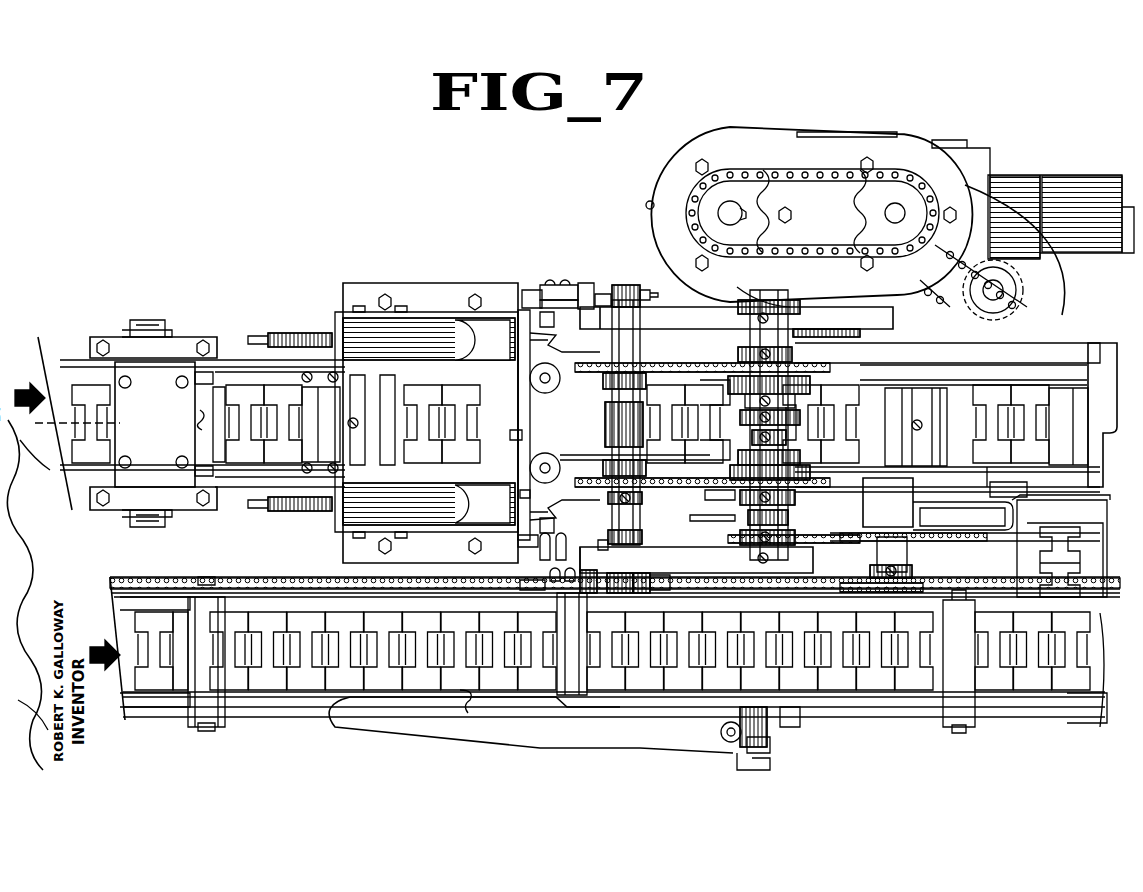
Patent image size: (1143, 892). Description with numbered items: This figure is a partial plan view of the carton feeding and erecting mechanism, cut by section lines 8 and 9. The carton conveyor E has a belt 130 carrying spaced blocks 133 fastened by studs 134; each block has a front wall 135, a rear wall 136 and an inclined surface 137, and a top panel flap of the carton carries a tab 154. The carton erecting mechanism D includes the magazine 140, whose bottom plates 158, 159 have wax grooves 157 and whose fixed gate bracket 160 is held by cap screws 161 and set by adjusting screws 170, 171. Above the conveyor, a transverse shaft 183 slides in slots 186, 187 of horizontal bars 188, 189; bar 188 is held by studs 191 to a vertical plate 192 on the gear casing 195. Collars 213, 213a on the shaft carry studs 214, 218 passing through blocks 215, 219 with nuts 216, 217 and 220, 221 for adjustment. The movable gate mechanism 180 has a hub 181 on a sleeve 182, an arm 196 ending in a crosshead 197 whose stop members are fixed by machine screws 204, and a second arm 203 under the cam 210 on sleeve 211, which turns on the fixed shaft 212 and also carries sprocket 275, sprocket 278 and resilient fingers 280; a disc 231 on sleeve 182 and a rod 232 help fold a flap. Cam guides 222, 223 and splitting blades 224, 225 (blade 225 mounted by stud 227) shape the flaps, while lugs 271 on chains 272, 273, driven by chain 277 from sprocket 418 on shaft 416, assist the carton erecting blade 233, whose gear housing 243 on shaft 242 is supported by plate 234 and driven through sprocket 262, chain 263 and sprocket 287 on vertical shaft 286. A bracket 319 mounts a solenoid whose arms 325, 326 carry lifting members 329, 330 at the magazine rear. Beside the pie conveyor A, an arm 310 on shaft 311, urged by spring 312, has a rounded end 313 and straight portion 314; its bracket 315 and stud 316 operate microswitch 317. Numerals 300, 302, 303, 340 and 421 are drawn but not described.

The conveyor belt 130 is at (97, 378).
The carton conveyor E is at (80, 375).
The carton erecting mechanism D is at (362, 268).
The pie conveyor A is at (138, 622).
The section line 8 is at (55, 423).
The section line 9 is at (787, 105).
The inverted U-shaped bracket 319 is at (173, 377).
The arm 325 is at (218, 378).
The front wall 135 is at (198, 420).
The arm 326 is at (213, 472).
The rear wall 136 is at (248, 424).
The blocks 133 is at (323, 440).
The lifting member 329 is at (312, 383).
The lifting member 330 is at (312, 468).
The magazine 140 is at (345, 330).
The grooves 157 is at (452, 353).
The carton supporting plate 158 is at (397, 397).
The bracket 160 is at (525, 387).
The crosshead 197 is at (515, 437).
The carton supporting plate 159 is at (397, 463).
The arm 196 is at (525, 445).
The machine screws 204 is at (520, 494).
The cap screws 161 is at (530, 500).
The adjusting screw 171 is at (548, 388).
The adjusting screw 170 is at (555, 462).
The splitting blade 224 is at (567, 339).
The splitting blade 225 is at (567, 508).
The cam guide 223 is at (530, 525).
The stud 227 is at (547, 563).
The cam guide 222 is at (527, 298).
The stud 214 is at (540, 292).
The nut 216 is at (577, 290).
The block 215 is at (582, 292).
The nut 217 is at (600, 293).
The transverse shaft 183 is at (640, 292).
The collar 213 is at (641, 293).
The collar 213a is at (655, 575).
The longitudinal slot 186 is at (736, 317).
The longitudinal slot 187 is at (696, 560).
The bracket 300 is at (795, 352).
The studs 191 is at (877, 330).
The sprocket 278 is at (772, 547).
The sleeve 182 is at (641, 360).
The lugs 271 is at (623, 378).
The hub 181 is at (627, 428).
The second arm 203 is at (693, 408).
The disc 231 is at (685, 480).
The movable gate mechanism 180 is at (683, 405).
The sprocket 275 is at (757, 350).
The endless chain 272 is at (813, 407).
The cam 210 is at (798, 425).
The resilient fingers 280 is at (823, 455).
The endless chain 273 is at (812, 479).
The drive chain 277 is at (762, 535).
The rod 232 is at (705, 497).
The sleeve 211 is at (760, 507).
The plate 234 is at (835, 164).
The vertical shaft 242 is at (722, 210).
The rotating gear housing 243 is at (665, 146).
The sprocket 287 is at (862, 214).
The vertical shaft 286 is at (890, 215).
The drive chain 263 is at (787, 183).
The main drive sprocket 262 is at (772, 225).
The horizontal bar 188 is at (743, 312).
The carton erecting blade 233 is at (773, 305).
The vertical plate 192 is at (885, 292).
The gear casing 195 is at (974, 142).
The motor 421 is at (1133, 200).
The tab 154 is at (1095, 390).
The inclined surface 137 is at (925, 435).
The studs 134 is at (917, 425).
The block 302 is at (1061, 546).
The block 303 is at (853, 512).
The sprocket 418 is at (915, 540).
The transverse shaft 416 is at (905, 553).
The direction 340 is at (1015, 572).
The block 219 is at (580, 600).
The stud 218 is at (548, 592).
The nut 220 is at (587, 593).
The nut 221 is at (605, 595).
The horizontal bar 189 is at (708, 583).
The fixed transverse shaft 212 is at (777, 595).
The arm 310 is at (605, 741).
The rearmost end 313 is at (333, 720).
The elongated straight portion 314 is at (462, 690).
The vertical shaft 311 is at (722, 730).
The bracket 315 is at (742, 757).
The stud 316 is at (742, 768).
The compression spring 312 is at (797, 718).
The microswitch 317 is at (790, 740).